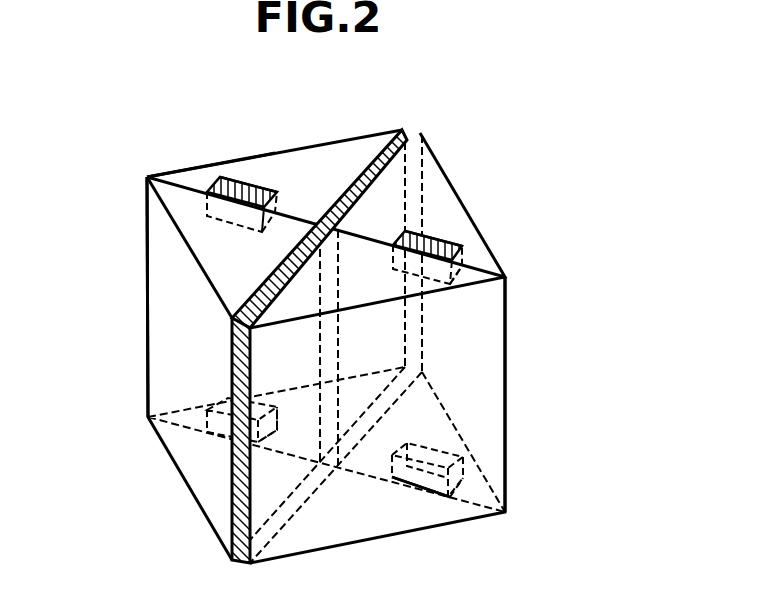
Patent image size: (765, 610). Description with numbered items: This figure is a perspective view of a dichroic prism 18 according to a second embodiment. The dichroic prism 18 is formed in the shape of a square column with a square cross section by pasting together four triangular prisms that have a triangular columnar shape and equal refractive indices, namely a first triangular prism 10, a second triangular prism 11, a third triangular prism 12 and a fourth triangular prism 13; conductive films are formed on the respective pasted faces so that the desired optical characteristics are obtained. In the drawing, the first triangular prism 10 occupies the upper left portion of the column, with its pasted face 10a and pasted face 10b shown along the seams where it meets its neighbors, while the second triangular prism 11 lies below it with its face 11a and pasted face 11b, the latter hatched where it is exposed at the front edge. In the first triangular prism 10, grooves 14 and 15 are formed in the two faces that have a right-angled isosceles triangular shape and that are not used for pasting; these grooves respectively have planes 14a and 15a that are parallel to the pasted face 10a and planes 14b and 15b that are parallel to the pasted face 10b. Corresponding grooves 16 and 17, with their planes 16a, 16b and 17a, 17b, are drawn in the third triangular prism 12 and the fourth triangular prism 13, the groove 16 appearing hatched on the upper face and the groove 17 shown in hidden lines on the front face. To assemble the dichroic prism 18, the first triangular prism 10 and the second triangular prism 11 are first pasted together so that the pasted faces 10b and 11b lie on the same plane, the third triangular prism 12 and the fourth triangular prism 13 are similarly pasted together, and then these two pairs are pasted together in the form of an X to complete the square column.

The first triangular prism 10 is at (330, 157).
The pasted face 10a is at (185, 178).
The pasted face 10b is at (375, 150).
The second triangular prism 11 is at (188, 213).
The face of second triangular prism 11a is at (187, 360).
The pasted face 11b is at (233, 527).
The third triangular prism 12 is at (442, 197).
The fourth triangular prism 13 is at (480, 367).
The groove 14 is at (212, 182).
The plane 14a is at (238, 187).
The plane 14b is at (277, 213).
The groove 15 is at (215, 397).
The plane 15a is at (220, 430).
The plane 15b is at (280, 433).
The groove 16 is at (407, 226).
The plane of groove 16a is at (463, 259).
The plane of groove 16b is at (463, 285).
The groove 17 is at (477, 507).
The plane of groove 17a is at (422, 482).
The plane of groove 17b is at (458, 473).
The dichroic prism 18 is at (506, 418).